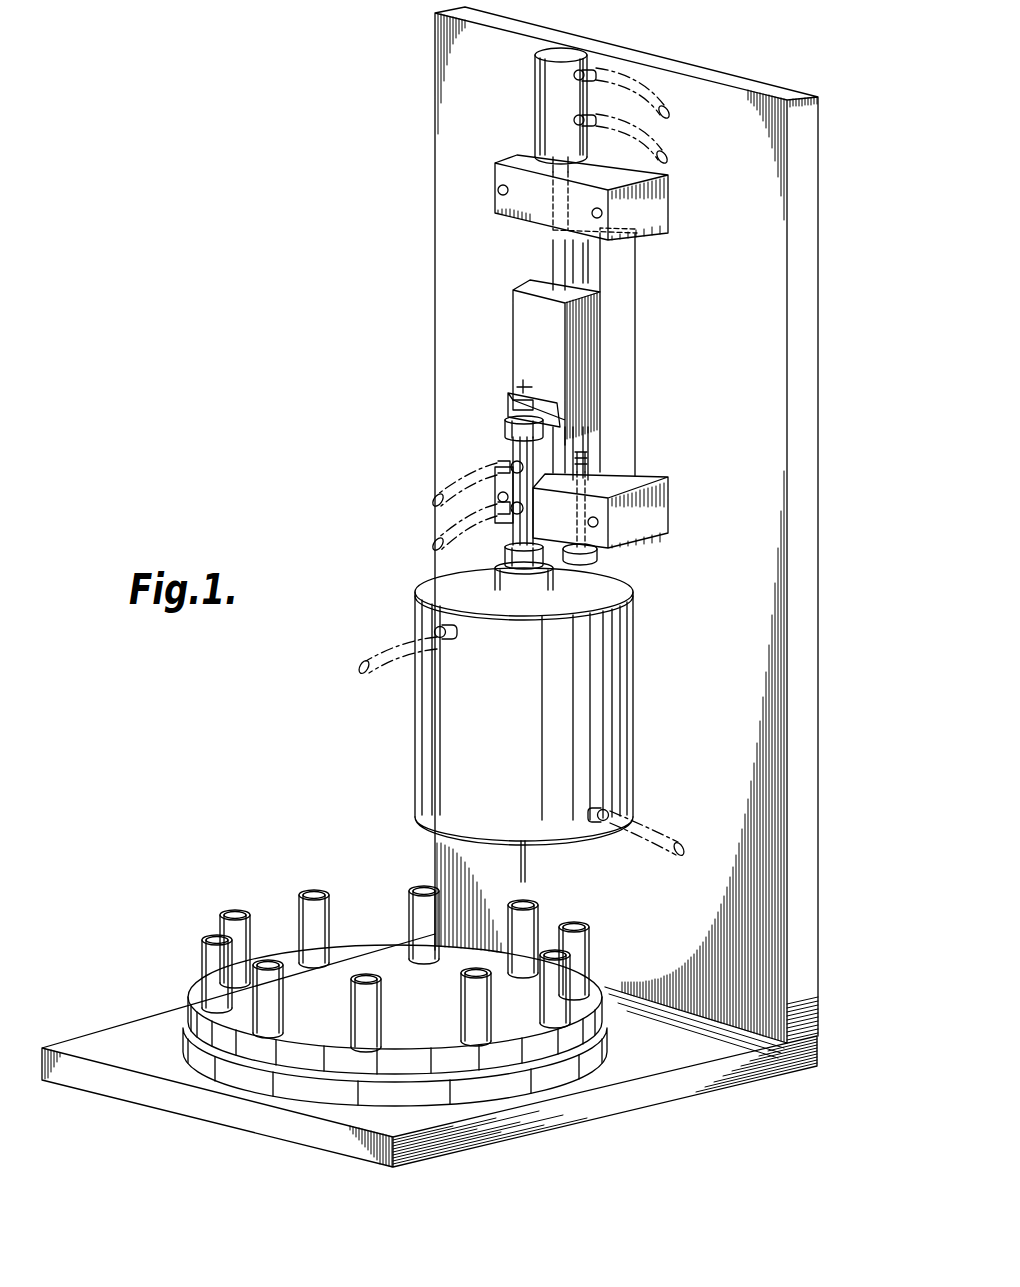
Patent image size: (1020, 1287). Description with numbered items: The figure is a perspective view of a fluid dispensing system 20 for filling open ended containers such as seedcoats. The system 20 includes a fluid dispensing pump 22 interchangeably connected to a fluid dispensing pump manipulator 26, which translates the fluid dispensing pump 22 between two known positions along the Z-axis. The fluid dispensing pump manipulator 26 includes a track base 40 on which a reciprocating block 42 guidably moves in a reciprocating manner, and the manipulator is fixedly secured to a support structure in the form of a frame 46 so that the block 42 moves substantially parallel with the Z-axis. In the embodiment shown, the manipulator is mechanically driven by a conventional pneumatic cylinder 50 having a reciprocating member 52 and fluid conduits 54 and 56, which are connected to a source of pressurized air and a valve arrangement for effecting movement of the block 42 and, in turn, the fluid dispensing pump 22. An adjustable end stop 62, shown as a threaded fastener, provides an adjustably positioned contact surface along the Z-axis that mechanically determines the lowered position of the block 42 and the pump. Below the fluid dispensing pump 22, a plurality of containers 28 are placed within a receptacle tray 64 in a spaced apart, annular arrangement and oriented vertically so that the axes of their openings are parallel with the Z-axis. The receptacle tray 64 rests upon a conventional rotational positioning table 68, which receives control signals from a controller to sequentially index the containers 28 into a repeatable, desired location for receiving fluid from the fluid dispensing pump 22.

The fluid dispensing system 20 is at (262, 152).
The fluid dispensing pump 22 is at (402, 612).
The fluid dispensing pump manipulator 26 is at (495, 234).
The open ended container 28 is at (302, 918).
The track base 40 is at (625, 341).
The reciprocating block 42 is at (590, 380).
The frame 46 is at (435, 392).
The pneumatic cylinder 50 is at (545, 111).
The reciprocating member 52 is at (553, 276).
The fluid conduit 54 is at (628, 86).
The fluid conduit 56 is at (650, 137).
The adjustable end stop 62 is at (584, 463).
The receptacle tray 64 is at (200, 1028).
The rotational positioning table 68 is at (527, 1070).